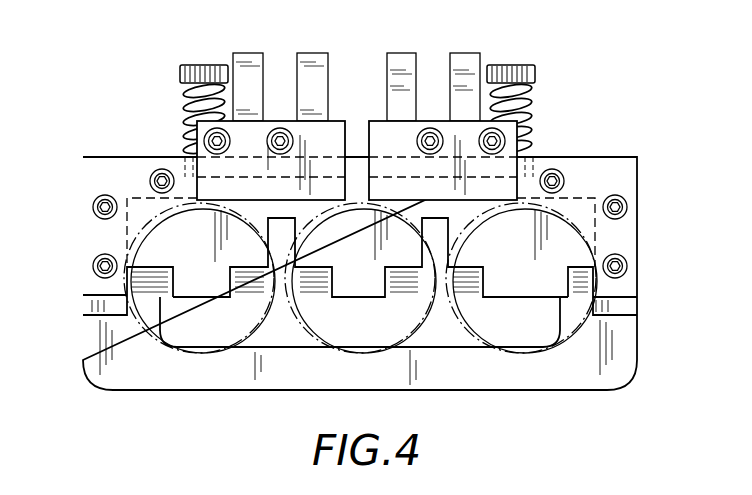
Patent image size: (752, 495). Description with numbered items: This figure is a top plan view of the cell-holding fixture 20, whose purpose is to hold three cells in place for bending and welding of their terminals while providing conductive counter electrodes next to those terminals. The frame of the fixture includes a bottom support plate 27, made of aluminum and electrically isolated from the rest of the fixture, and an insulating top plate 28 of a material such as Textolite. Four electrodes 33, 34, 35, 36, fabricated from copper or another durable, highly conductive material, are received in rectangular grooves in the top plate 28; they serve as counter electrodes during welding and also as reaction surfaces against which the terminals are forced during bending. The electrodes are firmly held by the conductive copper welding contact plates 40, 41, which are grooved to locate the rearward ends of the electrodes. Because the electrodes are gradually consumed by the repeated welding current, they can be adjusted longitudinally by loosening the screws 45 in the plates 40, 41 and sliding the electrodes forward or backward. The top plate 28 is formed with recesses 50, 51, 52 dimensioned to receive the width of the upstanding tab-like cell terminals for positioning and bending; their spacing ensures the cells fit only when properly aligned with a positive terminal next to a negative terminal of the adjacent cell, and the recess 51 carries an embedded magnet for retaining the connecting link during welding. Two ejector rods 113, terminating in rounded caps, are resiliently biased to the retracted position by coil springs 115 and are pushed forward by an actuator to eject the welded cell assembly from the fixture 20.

The cell-holding fixture 20 is at (628, 151).
The bottom support plate 27 is at (571, 375).
The top plate 28 is at (520, 263).
The electrode 33 is at (251, 61).
The electrode 34 is at (309, 61).
The electrode 35 is at (402, 64).
The electrode 36 is at (463, 64).
The conductive welding contact plate 40 is at (262, 152).
The conductive welding contact plate 41 is at (407, 152).
The screws 45 is at (204, 143).
The recess 50 is at (143, 268).
The recess 51 is at (465, 297).
The recess 52 is at (583, 284).
The ejector rods 113 is at (217, 60).
The coil springs 115 is at (187, 96).